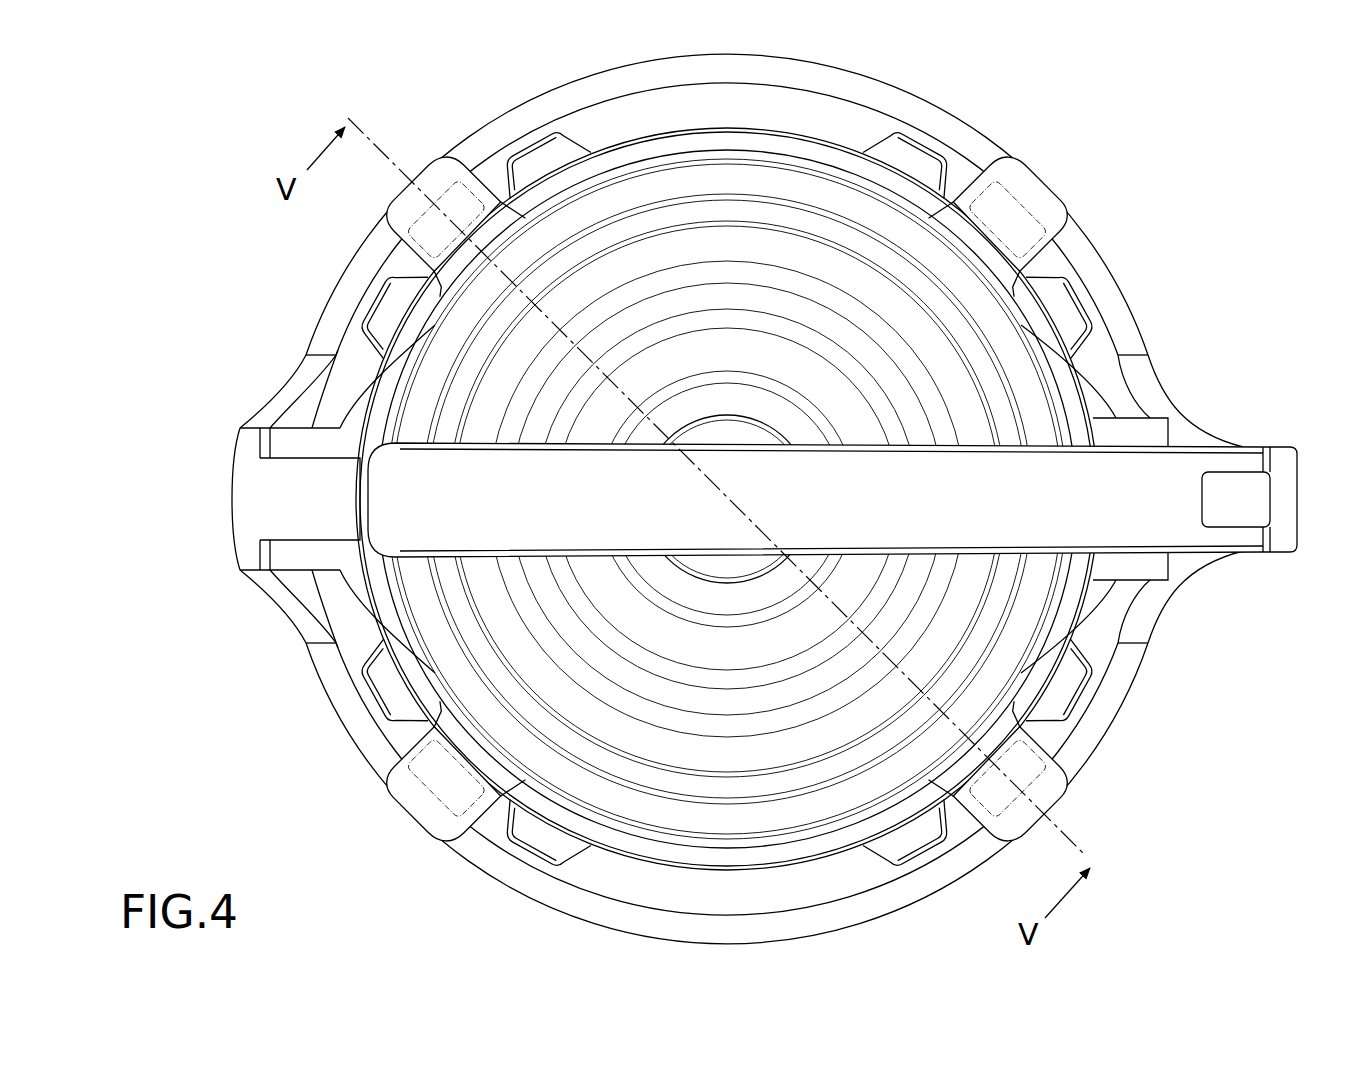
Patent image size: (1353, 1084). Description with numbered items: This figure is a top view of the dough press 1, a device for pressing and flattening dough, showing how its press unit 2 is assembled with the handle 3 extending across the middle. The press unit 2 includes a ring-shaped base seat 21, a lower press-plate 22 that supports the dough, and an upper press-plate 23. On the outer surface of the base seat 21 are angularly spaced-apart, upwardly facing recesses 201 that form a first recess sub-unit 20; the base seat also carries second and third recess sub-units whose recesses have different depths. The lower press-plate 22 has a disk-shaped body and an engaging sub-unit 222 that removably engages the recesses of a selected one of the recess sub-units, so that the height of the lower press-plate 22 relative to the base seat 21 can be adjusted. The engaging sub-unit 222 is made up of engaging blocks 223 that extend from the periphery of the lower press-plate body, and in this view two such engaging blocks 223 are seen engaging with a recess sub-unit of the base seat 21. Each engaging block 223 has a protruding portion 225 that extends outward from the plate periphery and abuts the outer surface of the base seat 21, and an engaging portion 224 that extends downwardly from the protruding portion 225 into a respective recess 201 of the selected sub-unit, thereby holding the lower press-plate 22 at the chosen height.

The dough press 1 is at (1140, 177).
The press unit 2 is at (1158, 337).
The handle 3 is at (1245, 445).
The first recess sub-unit 20 is at (925, 137).
The base seat 21 is at (1115, 690).
The lower press-plate 22 is at (1050, 177).
The upper press-plate 23 is at (793, 147).
The recesses 201 is at (537, 845).
The engaging sub-unit 222 is at (1062, 801).
The engaging blocks 223 is at (423, 177).
The engaging portion 224 is at (417, 817).
The protruding portion 225 is at (415, 798).